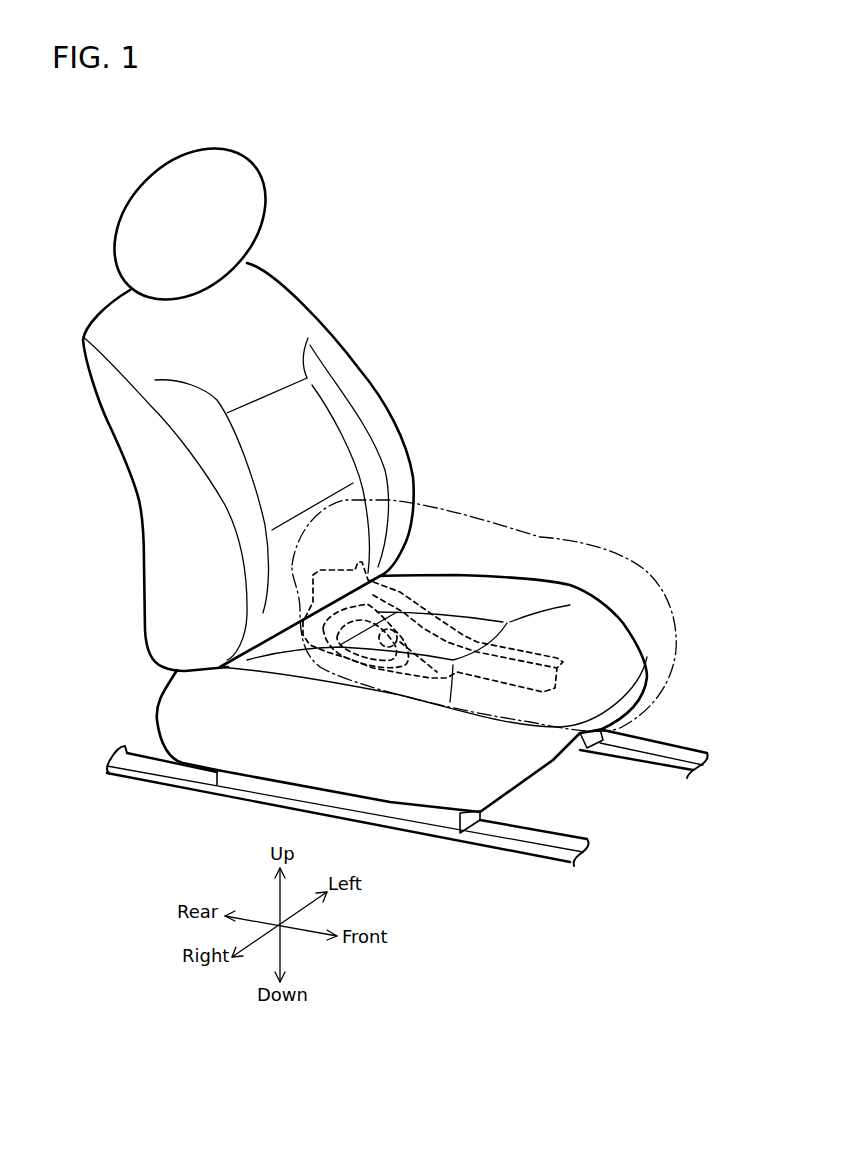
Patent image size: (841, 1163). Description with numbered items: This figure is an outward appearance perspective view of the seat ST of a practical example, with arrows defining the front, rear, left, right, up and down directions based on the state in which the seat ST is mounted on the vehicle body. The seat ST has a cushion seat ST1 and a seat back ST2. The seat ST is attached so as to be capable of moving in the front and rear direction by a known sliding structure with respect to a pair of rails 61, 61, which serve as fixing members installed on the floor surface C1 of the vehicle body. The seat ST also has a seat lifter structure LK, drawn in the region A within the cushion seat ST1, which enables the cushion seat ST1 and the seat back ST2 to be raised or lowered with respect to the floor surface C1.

The seat ST is at (379, 476).
The cushion seat ST1 is at (528, 590).
The seat back ST2 is at (310, 423).
The region where the link mechanism is arranged A is at (587, 542).
The seat lifter structure LK is at (445, 632).
The rails 61 is at (667, 745).
The floor surface C1 is at (421, 775).